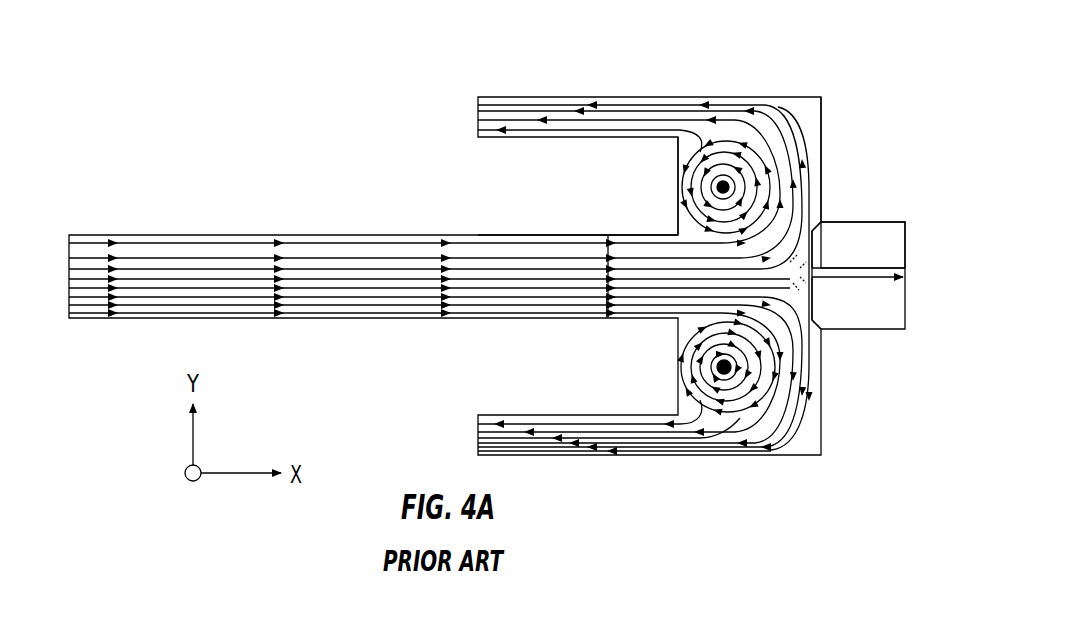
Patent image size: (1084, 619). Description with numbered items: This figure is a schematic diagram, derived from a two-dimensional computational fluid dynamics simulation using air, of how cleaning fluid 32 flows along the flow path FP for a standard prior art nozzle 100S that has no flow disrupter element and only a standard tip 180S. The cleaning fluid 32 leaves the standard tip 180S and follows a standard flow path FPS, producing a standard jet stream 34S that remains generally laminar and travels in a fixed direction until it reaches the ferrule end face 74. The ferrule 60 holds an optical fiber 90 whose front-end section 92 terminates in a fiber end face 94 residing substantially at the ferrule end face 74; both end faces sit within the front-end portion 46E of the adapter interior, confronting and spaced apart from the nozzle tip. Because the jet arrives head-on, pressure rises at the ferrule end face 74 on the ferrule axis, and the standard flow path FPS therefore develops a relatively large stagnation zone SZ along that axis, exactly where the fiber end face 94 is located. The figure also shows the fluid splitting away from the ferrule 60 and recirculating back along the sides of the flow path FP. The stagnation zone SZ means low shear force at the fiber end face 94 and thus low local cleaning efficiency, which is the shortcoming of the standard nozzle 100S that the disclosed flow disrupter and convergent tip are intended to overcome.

The standard prior art nozzle 100S is at (130, 110).
The cleaning fluid 32 is at (137, 257).
The standard jet stream 34S is at (661, 214).
The front-end portion 46E is at (806, 113).
The fiber end face 94 is at (813, 267).
The ferrule 60 is at (881, 186).
The optical fiber 90 is at (856, 264).
The front-end section 92 is at (879, 273).
The ferrule end face 74 is at (787, 302).
The standard tip 180S is at (569, 234).
The standard flow path FPS is at (603, 140).
The stagnation zone SZ is at (797, 270).
The flow path FP is at (541, 408).